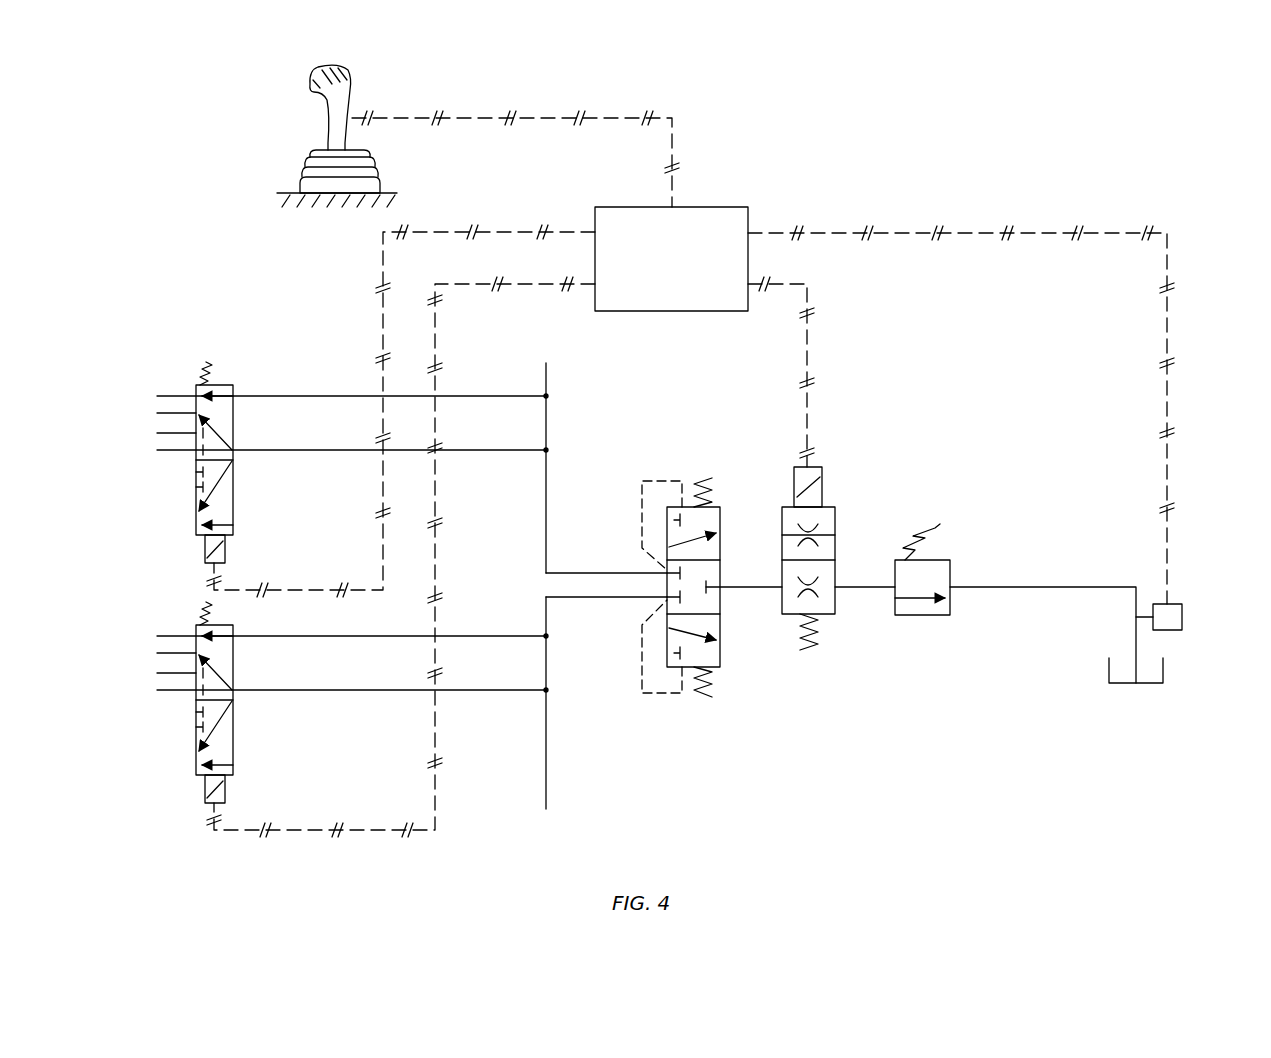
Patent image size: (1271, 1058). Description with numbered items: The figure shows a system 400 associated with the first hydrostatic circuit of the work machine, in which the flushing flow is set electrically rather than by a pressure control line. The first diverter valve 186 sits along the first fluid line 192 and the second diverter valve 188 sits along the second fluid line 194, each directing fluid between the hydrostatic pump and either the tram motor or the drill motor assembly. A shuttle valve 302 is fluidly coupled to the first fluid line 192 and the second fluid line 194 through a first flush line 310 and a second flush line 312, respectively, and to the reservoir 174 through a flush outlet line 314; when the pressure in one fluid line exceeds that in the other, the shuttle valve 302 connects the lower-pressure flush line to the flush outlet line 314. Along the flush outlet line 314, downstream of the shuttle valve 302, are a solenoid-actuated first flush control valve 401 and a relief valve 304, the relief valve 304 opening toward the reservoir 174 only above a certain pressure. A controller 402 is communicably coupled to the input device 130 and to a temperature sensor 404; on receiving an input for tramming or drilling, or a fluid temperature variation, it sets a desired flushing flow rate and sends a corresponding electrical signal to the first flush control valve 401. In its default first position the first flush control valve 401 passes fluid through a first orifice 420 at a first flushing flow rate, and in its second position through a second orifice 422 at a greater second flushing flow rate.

The input device 130 is at (348, 82).
The system 400 is at (1136, 188).
The controller 402 is at (595, 212).
The first diverter valve 186 is at (190, 520).
The second diverter valve 188 is at (190, 758).
The first fluid line 192 is at (546, 387).
The second fluid line 194 is at (546, 787).
The first flush line 310 is at (591, 573).
The second flush line 312 is at (587, 597).
The shuttle valve 302 is at (726, 514).
The flush outlet line 314 is at (737, 590).
The first flush control valve 401 is at (839, 515).
The second orifice 422 is at (810, 540).
The first orifice 420 is at (810, 592).
The relief valve 304 is at (956, 564).
The temperature sensor 404 is at (1182, 617).
The reservoir 174 is at (1163, 672).